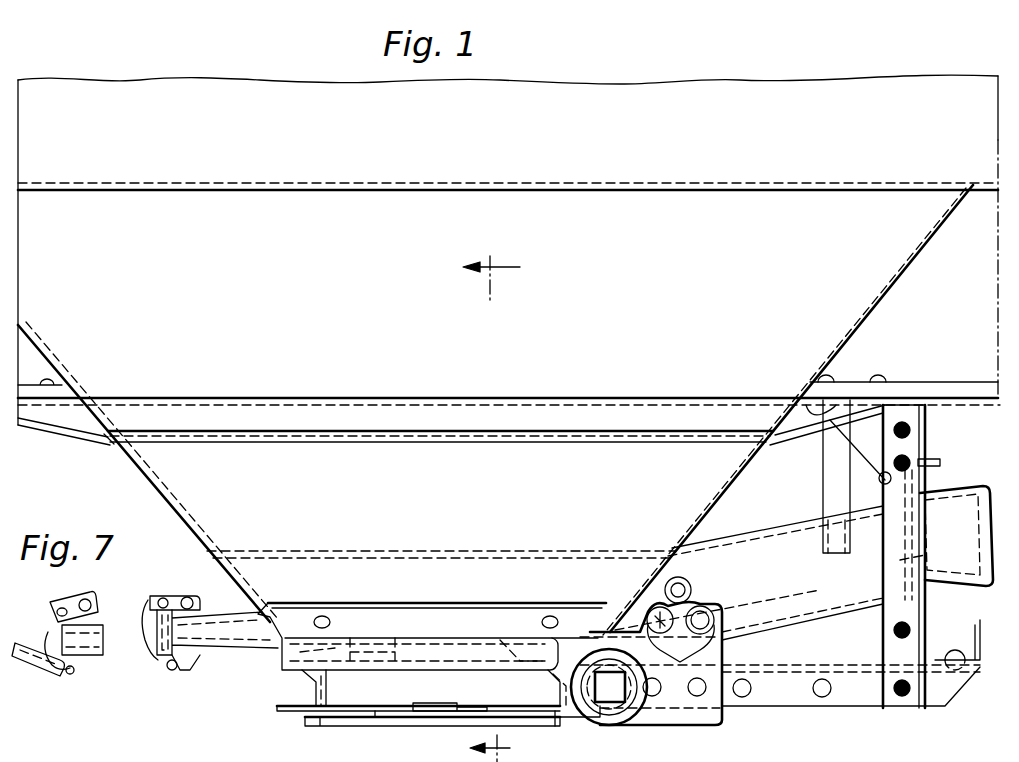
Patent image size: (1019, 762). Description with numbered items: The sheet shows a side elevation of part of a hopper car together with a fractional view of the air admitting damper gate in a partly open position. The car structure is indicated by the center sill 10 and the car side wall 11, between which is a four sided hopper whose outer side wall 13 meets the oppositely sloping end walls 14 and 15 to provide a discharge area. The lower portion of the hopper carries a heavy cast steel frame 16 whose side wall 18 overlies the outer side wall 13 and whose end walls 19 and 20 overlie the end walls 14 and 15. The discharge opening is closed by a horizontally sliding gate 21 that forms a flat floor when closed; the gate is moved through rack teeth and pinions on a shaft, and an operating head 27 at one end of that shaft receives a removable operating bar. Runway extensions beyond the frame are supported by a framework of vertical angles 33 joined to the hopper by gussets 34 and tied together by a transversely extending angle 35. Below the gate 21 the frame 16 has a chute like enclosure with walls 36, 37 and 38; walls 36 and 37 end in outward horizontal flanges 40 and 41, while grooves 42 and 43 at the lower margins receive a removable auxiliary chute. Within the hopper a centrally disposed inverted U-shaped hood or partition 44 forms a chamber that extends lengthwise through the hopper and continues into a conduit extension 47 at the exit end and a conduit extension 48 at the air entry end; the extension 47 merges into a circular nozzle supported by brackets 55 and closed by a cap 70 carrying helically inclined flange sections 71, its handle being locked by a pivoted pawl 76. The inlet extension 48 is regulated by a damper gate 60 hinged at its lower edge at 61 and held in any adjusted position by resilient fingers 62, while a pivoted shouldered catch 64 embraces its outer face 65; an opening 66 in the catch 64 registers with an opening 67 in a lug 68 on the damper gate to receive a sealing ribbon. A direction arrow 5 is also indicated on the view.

In FIG. 1, the direction arrow 5 is at (491, 266).
In FIG. 1, the center sill 10 is at (945, 382).
In FIG. 1, the car side wall 11 is at (522, 135).
In FIG. 1, the outer side wall 13 is at (445, 493).
In FIG. 1, the end wall 14 is at (722, 494).
In FIG. 1, the end wall 15 is at (137, 474).
In FIG. 1, the frame 16 is at (292, 720).
In FIG. 1, the side wall of frame 18 is at (368, 603).
In FIG. 1, the end wall of frame 19 is at (660, 596).
In FIG. 1, the end wall of frame 20 is at (272, 605).
In FIG. 1, the horizontally sliding gate 21 is at (478, 655).
In FIG. 1, the operating head 27 is at (617, 725).
In FIG. 1, the vertical angles 33 is at (927, 424).
In FIG. 1, the gussets 34 is at (805, 438).
In FIG. 1, the transversely extending angle 35 is at (978, 622).
In FIG. 1, the wall of chute enclosure 36 is at (313, 686).
In FIG. 1, the wall of chute enclosure 37 is at (378, 696).
In FIG. 1, the wall of chute enclosure 38 is at (548, 693).
In FIG. 1, the horizontal flange 40 is at (277, 708).
In FIG. 1, the horizontal flange 41 is at (405, 711).
In FIG. 1, the groove 42 is at (557, 719).
In FIG. 1, the groove 43 is at (340, 719).
In FIG. 1, the hood shaped member or partition 44 is at (420, 566).
In FIG. 1, the conduit extension 47 is at (793, 530).
In FIG. 1, the conduit extension 48 is at (262, 646).
In FIG. 7, the conduit extension 48 is at (106, 655).
In FIG. 1, the brackets 55 is at (830, 471).
In FIG. 1, the damper gate 60 is at (154, 660).
In FIG. 7, the damper gate 60 is at (96, 664).
In FIG. 1, the hinge 61 is at (175, 672).
In FIG. 7, the hinge 61 is at (74, 674).
In FIG. 1, the resilient lugs or fingers 62 is at (222, 640).
In FIG. 7, the resilient lugs or fingers 62 is at (58, 640).
In FIG. 1, the pivoted shouldered catch 64 is at (190, 597).
In FIG. 7, the pivoted shouldered catch 64 is at (86, 599).
In FIG. 1, the outer face of damper gate 65 is at (162, 616).
In FIG. 7, the outer face of damper gate 65 is at (58, 672).
In FIG. 1, the opening 66 is at (164, 598).
In FIG. 7, the opening 66 is at (60, 608).
In FIG. 7, the opening 67 is at (22, 662).
In FIG. 7, the lug 68 is at (16, 643).
In FIG. 1, the cap 70 is at (984, 490).
In FIG. 1, the flange sections 71 is at (932, 542).
In FIG. 1, the pivoted pawl 76 is at (940, 462).